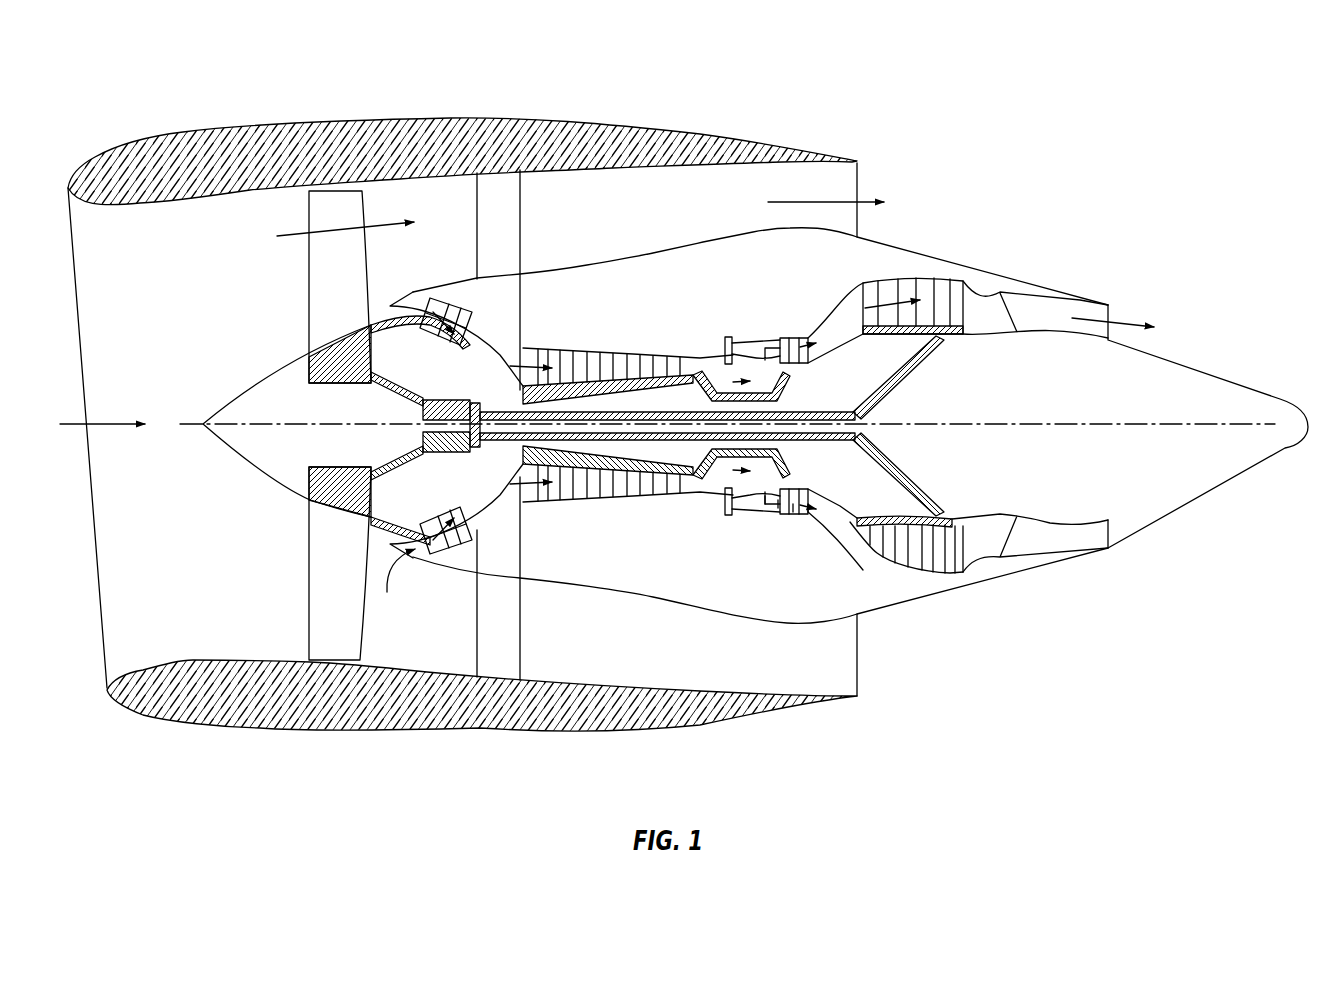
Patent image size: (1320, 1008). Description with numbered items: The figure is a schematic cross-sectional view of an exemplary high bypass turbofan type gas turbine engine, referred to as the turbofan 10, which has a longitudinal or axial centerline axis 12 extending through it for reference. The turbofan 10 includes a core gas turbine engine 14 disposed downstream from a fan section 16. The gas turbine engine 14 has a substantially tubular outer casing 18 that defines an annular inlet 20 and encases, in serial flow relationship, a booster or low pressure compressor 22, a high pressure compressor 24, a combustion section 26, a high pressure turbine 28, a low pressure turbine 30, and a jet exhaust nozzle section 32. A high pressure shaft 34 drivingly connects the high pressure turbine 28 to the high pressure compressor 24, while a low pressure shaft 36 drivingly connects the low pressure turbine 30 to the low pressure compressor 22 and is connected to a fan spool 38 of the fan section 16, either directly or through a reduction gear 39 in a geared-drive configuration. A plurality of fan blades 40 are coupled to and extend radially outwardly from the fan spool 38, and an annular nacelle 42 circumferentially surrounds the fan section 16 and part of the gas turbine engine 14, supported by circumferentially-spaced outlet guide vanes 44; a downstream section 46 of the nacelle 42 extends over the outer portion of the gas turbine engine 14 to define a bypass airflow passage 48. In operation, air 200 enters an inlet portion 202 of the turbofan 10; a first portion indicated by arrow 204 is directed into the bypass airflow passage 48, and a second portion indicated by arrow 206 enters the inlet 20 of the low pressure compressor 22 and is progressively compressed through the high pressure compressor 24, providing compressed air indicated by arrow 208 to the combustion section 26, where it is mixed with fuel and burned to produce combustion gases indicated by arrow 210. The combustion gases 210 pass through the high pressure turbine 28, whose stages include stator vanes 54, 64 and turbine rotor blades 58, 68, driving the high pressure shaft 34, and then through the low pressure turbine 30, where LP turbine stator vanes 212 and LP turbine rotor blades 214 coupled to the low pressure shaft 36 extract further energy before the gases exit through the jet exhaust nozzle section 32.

The turbofan 10 is at (1019, 148).
The centerline axis 12 is at (1055, 422).
The gas turbine engine 14 is at (705, 306).
The fan section 16 is at (353, 98).
The outer casing 18 is at (700, 610).
The annular inlet 20 is at (396, 585).
The low pressure compressor 22 is at (484, 506).
The high pressure compressor 24 is at (554, 494).
The combustion section 26 is at (744, 501).
The high pressure turbine 28 is at (815, 497).
The low pressure turbine 30 is at (955, 573).
The jet exhaust nozzle section 32 is at (1123, 310).
The high pressure shaft 34 is at (796, 376).
The low pressure shaft 36 is at (478, 402).
The fan spool 38 is at (365, 390).
The reduction gear 39 is at (468, 452).
The fan blades 40 is at (309, 597).
The nacelle 42 is at (355, 730).
The outlet guide vanes 44 is at (522, 226).
The downstream section 46 is at (755, 134).
The bypass airflow passage 48 is at (664, 220).
The stator vanes 54 is at (765, 504).
The turbine rotor blades 58 is at (778, 508).
The stator vanes 64 is at (793, 512).
The turbine rotor blades 68 is at (810, 512).
The air 200 is at (103, 422).
The inlet portion 202 is at (107, 686).
The arrow 204 is at (312, 228).
The arrow 206 is at (399, 298).
The arrow 208 is at (722, 352).
The arrow 210 is at (778, 343).
The LP turbine stator vanes 212 is at (860, 318).
The LP turbine rotor blades 214 is at (866, 284).